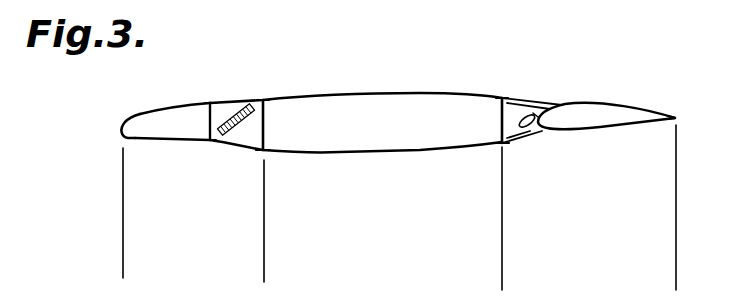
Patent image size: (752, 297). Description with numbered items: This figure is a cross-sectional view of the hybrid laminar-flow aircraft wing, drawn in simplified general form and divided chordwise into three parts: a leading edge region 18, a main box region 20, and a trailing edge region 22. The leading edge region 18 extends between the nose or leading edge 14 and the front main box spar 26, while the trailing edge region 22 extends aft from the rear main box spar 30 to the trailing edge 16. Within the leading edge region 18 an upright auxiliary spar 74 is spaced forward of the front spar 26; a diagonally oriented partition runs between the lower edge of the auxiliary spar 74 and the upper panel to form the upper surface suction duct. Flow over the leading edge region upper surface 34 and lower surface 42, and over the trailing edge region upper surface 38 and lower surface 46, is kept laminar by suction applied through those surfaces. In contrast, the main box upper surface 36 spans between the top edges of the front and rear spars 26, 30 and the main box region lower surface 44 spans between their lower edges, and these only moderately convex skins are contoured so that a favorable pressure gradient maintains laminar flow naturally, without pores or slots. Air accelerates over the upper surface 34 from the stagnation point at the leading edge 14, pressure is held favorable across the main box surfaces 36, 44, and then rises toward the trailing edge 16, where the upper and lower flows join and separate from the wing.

The leading edge 14 is at (122, 127).
The trailing edge 16 is at (681, 113).
The leading edge region 18 is at (240, 258).
The main box region 20 is at (436, 260).
The trailing edge region 22 is at (600, 283).
The front main box spar 26 is at (264, 117).
The rear main box spar 30 is at (498, 118).
The leading edge region upper surface 34 is at (139, 103).
The main box upper surface 36 is at (343, 93).
The trailing edge region upper surface 38 is at (573, 100).
The leading edge region lower surface 42 is at (167, 140).
The main box region lower surface 44 is at (370, 151).
The trailing edge region lower surface 46 is at (583, 128).
The auxiliary spar 74 is at (213, 118).